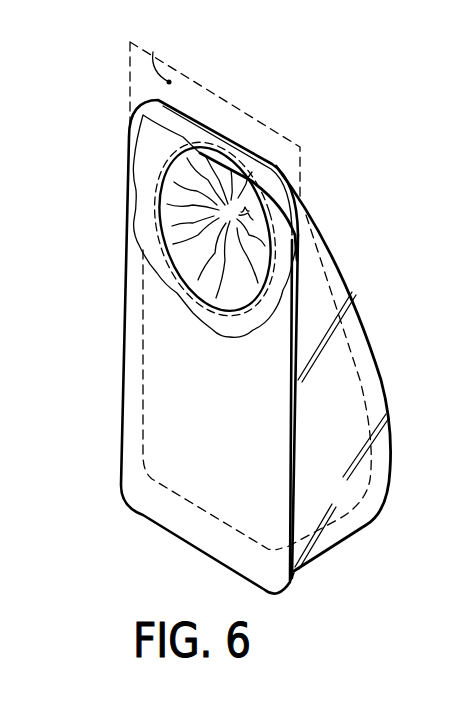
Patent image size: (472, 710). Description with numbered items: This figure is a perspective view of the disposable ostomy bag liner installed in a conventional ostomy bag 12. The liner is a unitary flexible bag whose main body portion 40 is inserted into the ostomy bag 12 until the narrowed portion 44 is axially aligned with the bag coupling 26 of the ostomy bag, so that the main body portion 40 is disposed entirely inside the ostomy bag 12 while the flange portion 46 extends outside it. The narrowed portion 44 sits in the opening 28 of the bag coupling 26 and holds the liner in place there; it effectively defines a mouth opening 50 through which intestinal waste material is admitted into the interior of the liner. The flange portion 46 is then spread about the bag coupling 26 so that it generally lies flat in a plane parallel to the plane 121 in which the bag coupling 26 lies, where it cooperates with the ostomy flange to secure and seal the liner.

The ostomy bag 12 is at (339, 546).
The plane 121 is at (158, 55).
The bag coupling 26 is at (228, 315).
The opening 28 is at (200, 247).
The main body portion 40 is at (329, 281).
The narrowed portion 44 is at (227, 165).
The flange portion 46 is at (273, 193).
The mouth opening 50 is at (182, 203).